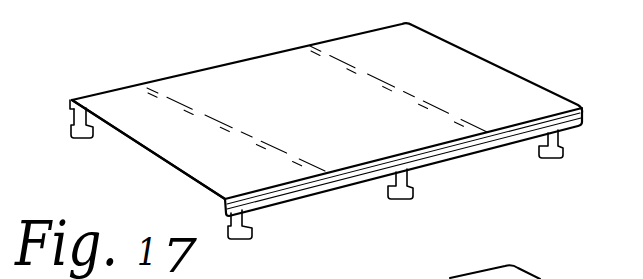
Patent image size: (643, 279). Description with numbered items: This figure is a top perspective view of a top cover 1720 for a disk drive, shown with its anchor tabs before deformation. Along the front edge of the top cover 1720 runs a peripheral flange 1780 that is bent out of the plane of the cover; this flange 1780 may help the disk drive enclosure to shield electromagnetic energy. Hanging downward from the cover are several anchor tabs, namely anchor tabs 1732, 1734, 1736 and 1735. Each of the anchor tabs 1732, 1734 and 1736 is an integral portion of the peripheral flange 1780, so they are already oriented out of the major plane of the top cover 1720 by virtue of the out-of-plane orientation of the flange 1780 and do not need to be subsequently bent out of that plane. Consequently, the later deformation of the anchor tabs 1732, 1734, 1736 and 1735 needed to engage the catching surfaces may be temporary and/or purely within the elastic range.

The top cover 1720 is at (482, 67).
The anchor tab 1732 is at (561, 152).
The anchor tab 1734 is at (411, 189).
The anchor tab 1735 is at (88, 132).
The anchor tab 1736 is at (252, 235).
The peripheral flange 1780 is at (345, 186).